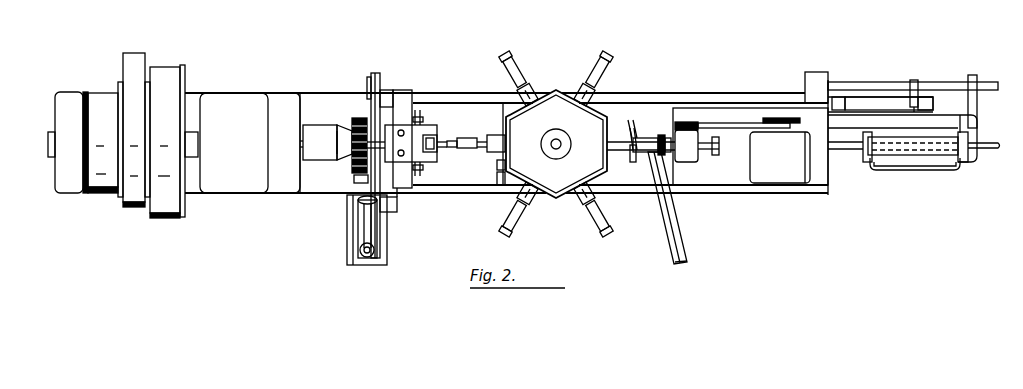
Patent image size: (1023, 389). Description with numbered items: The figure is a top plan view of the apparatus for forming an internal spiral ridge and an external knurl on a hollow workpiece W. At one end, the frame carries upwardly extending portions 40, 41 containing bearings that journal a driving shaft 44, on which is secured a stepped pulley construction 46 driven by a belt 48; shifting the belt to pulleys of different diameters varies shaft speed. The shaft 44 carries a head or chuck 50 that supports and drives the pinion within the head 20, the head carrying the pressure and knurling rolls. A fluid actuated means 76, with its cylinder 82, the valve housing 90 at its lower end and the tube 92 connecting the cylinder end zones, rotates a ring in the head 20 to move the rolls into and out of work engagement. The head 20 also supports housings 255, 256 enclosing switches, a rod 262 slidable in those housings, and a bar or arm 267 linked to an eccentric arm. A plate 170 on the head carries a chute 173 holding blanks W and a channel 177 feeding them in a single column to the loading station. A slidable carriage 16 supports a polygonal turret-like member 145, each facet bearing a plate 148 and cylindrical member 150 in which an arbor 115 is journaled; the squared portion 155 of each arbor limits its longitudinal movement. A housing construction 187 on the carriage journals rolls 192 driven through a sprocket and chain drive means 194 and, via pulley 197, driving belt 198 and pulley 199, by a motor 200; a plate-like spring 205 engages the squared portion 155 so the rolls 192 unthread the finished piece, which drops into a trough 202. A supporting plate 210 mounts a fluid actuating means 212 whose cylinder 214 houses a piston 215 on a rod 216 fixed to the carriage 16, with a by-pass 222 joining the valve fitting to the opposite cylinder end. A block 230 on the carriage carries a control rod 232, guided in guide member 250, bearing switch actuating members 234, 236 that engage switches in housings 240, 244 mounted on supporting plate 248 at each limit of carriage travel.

The carriage 16 is at (795, 190).
The head 20 is at (399, 178).
The upwardly extending portion 40 is at (63, 92).
The upwardly extending portion 41 is at (215, 93).
The driving shaft 44 is at (48, 144).
The stepped pulley construction 46 is at (97, 201).
The belt 48 is at (125, 55).
The head or chuck 50 is at (332, 125).
The fluid actuated means 76 is at (392, 236).
The cylinder 82 is at (357, 215).
The housing 90 is at (366, 257).
The tube 92 is at (353, 239).
The arbor 115 is at (466, 130).
The turret-like member 145 is at (556, 144).
The plate 148 is at (500, 190).
The cylindrical member 150 is at (500, 167).
The squared portion 155 is at (490, 135).
The plate 170 is at (403, 92).
The chute 173 is at (437, 160).
The channel 177 is at (446, 108).
The housing construction 187 is at (690, 165).
The roll 192 is at (665, 196).
The sprocket and chain drive means 194 is at (710, 155).
The pulley 197 is at (685, 122).
The driving belt 198 is at (720, 123).
The pulley 199 is at (770, 118).
The motor 200 is at (780, 157).
The trough 202 is at (686, 258).
The plate-like spring 205 is at (632, 124).
The supporting plate 210 is at (960, 128).
The fluid actuating means 212 is at (962, 178).
The cylinder 214 is at (888, 160).
The piston 215 is at (945, 172).
The rod 216 is at (840, 133).
The by-pass 222 is at (918, 172).
The block 230 is at (808, 72).
The control rod 232 is at (990, 82).
The switch actuating member 234 is at (920, 86).
The switch actuating member 236 is at (912, 80).
The housing 240 is at (928, 97).
The switch housing 244 is at (875, 97).
The supporting plate 248 is at (862, 110).
The guide member 250 is at (978, 108).
The housing 255 is at (366, 172).
The housing 256 is at (380, 85).
The rod 262 is at (400, 172).
The bar or arm 267 is at (367, 80).
The workpiece W is at (510, 50).